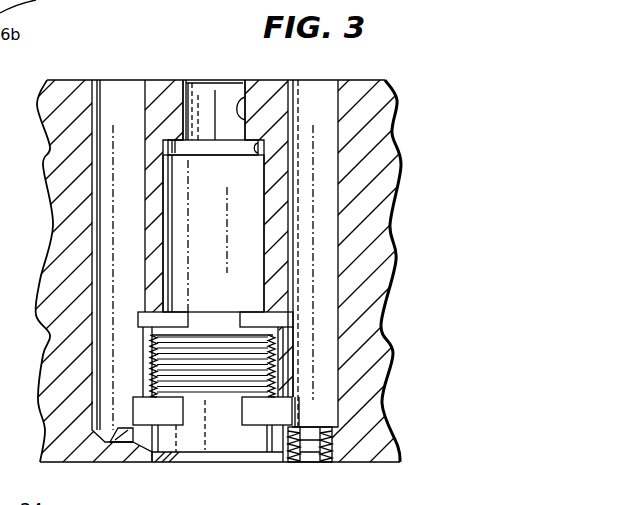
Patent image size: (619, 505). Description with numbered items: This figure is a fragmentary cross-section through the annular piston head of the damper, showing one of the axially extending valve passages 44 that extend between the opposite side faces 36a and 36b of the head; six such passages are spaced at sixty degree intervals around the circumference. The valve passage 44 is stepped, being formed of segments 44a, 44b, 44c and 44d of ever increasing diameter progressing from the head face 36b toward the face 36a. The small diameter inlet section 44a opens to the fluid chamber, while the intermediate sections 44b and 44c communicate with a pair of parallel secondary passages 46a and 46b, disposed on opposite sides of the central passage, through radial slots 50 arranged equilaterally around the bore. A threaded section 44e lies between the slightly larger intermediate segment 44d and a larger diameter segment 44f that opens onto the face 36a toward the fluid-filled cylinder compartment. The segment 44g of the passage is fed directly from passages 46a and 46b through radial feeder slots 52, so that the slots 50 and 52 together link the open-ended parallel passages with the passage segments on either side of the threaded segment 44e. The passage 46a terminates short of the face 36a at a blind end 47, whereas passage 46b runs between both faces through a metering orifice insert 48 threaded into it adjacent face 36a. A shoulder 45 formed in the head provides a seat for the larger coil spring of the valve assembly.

The piston head face 36a is at (97, 462).
The piston head face 36b is at (86, 80).
The valve passage 44 is at (193, 212).
The inlet section 44a is at (250, 82).
The intermediate section 44b is at (258, 152).
The intermediate section 44c is at (264, 238).
The intermediate segment 44d is at (151, 340).
The threaded section 44e is at (272, 366).
The larger diameter segment 44f is at (168, 442).
The valve passage segment 44g is at (242, 409).
The shoulder 45 is at (170, 146).
The secondary passage 46a is at (130, 328).
The secondary passage 46b is at (385, 295).
The blind end 47 is at (132, 434).
The metering orifice insert 48 is at (320, 446).
The radial slots 50 is at (138, 314).
The radial feeder slots 52 is at (133, 410).